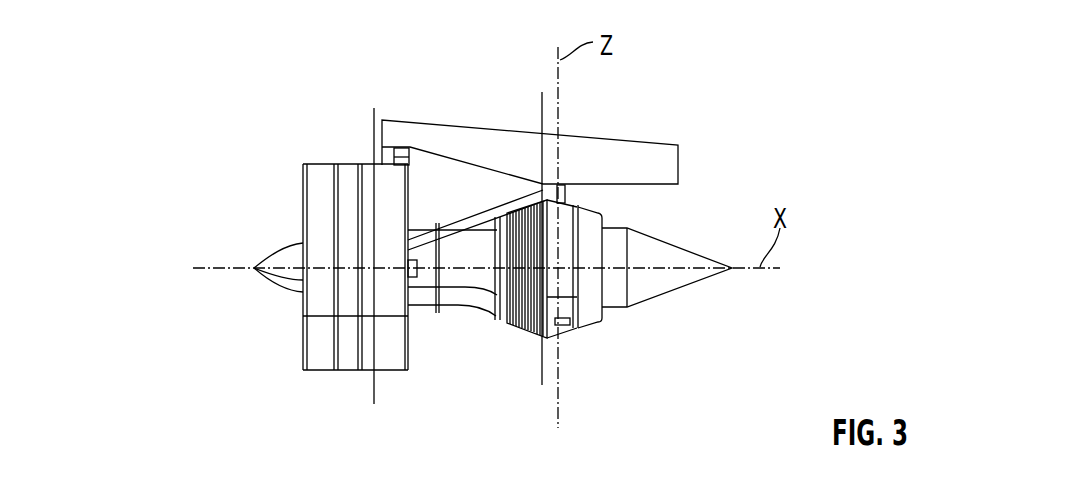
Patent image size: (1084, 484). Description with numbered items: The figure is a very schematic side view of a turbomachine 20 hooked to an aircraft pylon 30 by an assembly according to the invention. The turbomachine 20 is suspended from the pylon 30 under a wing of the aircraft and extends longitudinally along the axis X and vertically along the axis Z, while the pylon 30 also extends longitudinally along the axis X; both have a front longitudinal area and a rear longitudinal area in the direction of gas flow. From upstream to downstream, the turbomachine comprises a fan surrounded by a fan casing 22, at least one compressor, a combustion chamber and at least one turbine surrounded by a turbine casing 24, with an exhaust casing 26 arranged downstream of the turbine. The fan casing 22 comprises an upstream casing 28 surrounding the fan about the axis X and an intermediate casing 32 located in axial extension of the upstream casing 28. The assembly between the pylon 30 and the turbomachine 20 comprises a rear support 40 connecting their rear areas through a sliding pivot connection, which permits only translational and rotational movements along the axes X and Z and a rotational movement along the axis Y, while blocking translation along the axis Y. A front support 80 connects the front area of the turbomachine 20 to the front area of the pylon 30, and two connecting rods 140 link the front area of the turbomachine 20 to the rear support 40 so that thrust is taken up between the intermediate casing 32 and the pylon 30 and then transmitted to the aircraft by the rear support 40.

The turbomachine 20 is at (298, 152).
The fan casing 22 is at (346, 166).
The turbine casing 24 is at (512, 325).
The exhaust casing 26 is at (562, 330).
The upstream casing 28 is at (318, 347).
The pylon 30 is at (605, 138).
The intermediate casing 32 is at (393, 343).
The rear support 40 is at (571, 193).
The front support 80 is at (398, 150).
The connecting rods 140 is at (453, 217).